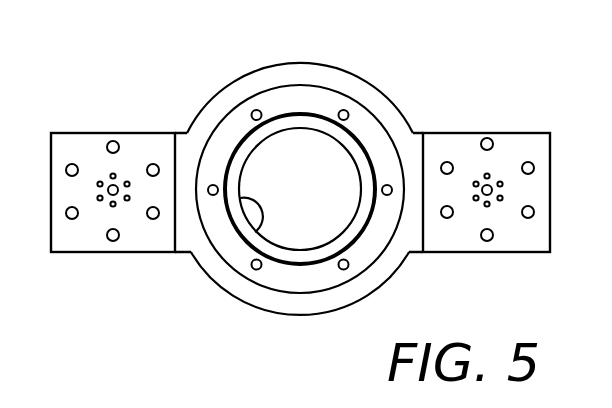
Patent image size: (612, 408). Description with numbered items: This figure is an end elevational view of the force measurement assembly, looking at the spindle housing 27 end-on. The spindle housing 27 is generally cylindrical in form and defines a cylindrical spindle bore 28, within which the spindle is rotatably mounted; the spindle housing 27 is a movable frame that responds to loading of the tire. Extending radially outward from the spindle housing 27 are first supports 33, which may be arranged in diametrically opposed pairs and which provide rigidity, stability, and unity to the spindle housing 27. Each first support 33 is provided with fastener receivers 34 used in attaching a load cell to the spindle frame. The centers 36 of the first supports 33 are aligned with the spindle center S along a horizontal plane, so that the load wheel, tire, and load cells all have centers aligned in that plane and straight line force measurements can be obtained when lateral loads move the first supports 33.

The spindle housing 27 is at (335, 100).
The spindle bore 28 is at (262, 200).
The first support 33 is at (82, 138).
The fastener receiver 34 is at (119, 146).
The center of first support 36 is at (110, 205).
The spindle center S is at (300, 190).